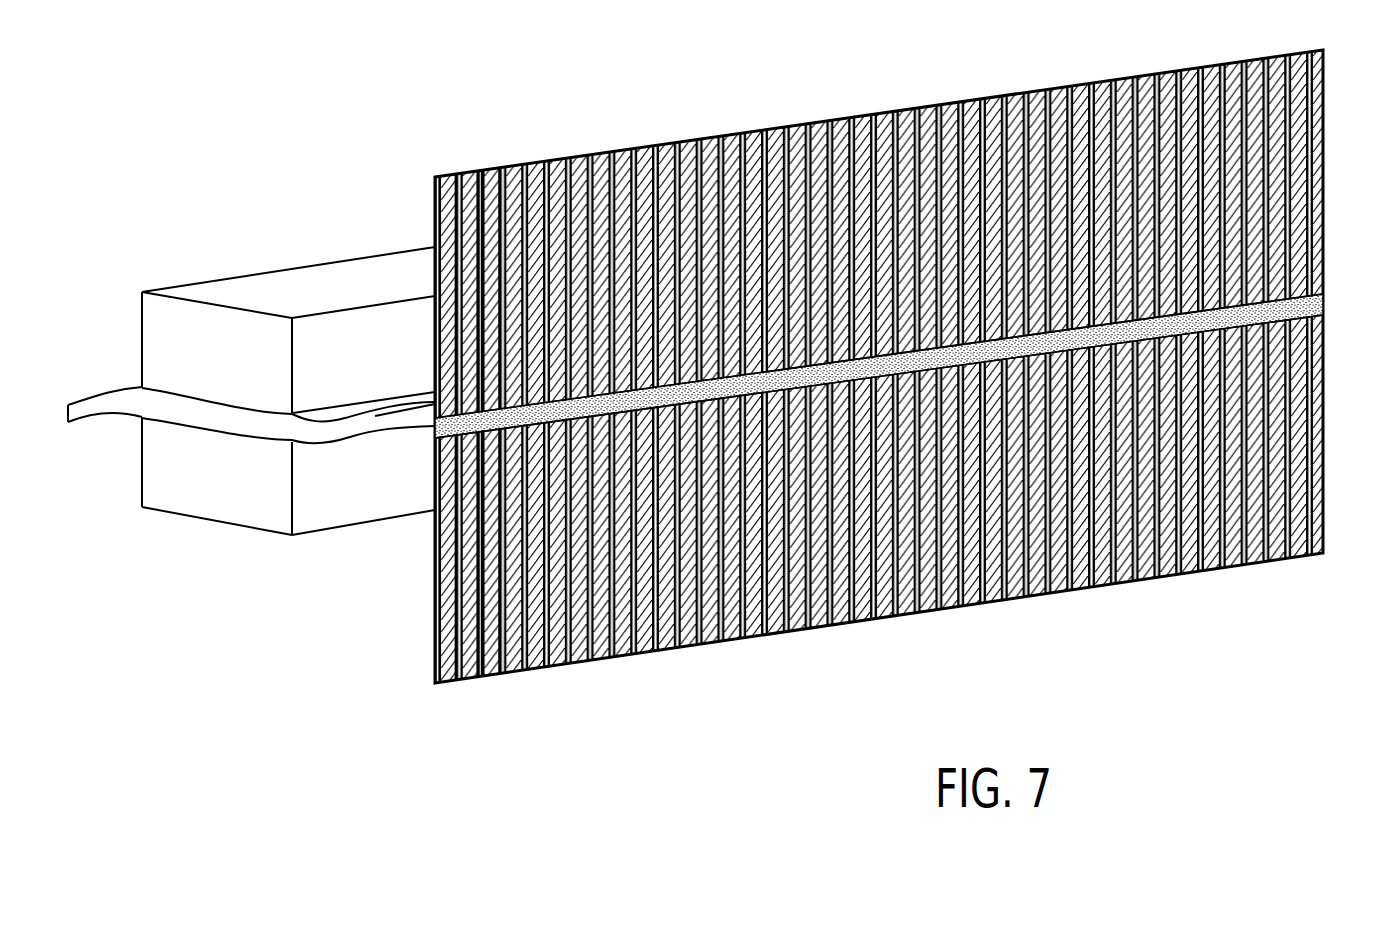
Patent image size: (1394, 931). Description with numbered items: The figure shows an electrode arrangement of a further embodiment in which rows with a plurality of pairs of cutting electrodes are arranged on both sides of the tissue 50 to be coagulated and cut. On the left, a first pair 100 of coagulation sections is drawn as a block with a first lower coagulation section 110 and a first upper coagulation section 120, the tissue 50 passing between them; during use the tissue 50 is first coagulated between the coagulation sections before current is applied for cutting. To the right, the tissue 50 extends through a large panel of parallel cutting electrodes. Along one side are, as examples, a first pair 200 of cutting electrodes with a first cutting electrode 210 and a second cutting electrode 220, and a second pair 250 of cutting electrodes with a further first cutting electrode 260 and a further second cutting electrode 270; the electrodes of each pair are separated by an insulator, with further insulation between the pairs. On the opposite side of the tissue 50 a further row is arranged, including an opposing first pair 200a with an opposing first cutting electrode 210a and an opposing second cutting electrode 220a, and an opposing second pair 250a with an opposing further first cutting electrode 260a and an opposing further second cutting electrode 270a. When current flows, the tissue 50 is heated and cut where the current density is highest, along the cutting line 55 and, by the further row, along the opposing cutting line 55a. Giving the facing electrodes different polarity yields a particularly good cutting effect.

The first pair of coagulation sections 100 is at (224, 182).
The first lower coagulation section 110 is at (198, 506).
The first upper coagulation section 120 is at (362, 273).
The tissue 50 is at (1327, 301).
The opposing cutting line 55a is at (1300, 289).
The cutting line 55 is at (1334, 323).
The opposing first pair of cutting electrodes 200a is at (452, 107).
The opposing first cutting electrode 210a is at (452, 176).
The opposing second cutting electrode 220a is at (472, 173).
The opposing second pair of cutting electrodes 250a is at (532, 84).
The opposing further first cutting electrode 260a is at (495, 168).
The opposing further second cutting electrode 270a is at (522, 168).
The first pair of cutting electrodes 200 is at (487, 760).
The first cutting electrode 210 is at (452, 683).
The second cutting electrode 220 is at (477, 677).
The second pair of cutting electrodes 250 is at (567, 737).
The further first cutting electrode 260 is at (503, 675).
The further second cutting electrode 270 is at (522, 670).